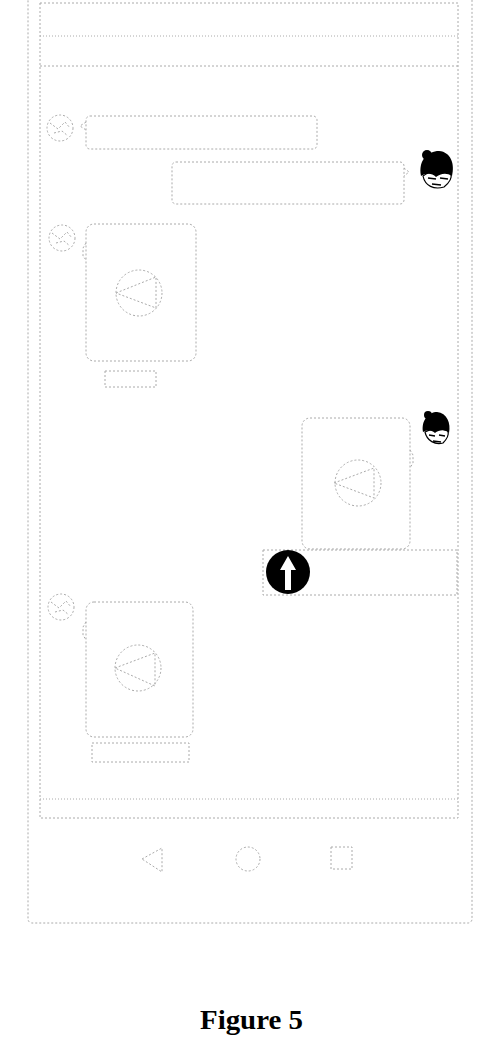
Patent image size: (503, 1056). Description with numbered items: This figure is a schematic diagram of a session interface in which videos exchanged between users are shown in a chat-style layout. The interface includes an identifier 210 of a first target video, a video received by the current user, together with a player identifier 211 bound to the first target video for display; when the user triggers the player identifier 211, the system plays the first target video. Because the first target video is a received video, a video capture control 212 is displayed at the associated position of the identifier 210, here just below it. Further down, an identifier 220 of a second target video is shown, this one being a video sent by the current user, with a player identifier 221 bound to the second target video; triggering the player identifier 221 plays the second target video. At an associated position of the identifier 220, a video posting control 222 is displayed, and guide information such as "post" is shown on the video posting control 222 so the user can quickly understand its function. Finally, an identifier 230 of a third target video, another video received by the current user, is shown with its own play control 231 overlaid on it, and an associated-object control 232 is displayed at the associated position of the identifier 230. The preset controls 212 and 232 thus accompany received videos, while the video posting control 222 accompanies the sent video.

The identifier of a first target video 210 is at (196, 290).
The player identifier 211 is at (158, 298).
The video capture control 212 is at (105, 382).
The identifier of a second target video 220 is at (337, 417).
The player identifier 221 is at (334, 483).
The video posting control 222 is at (263, 552).
The identifier of a third target video 230 is at (193, 660).
The play control of third video 231 is at (160, 672).
The associated-object control 232 is at (92, 750).